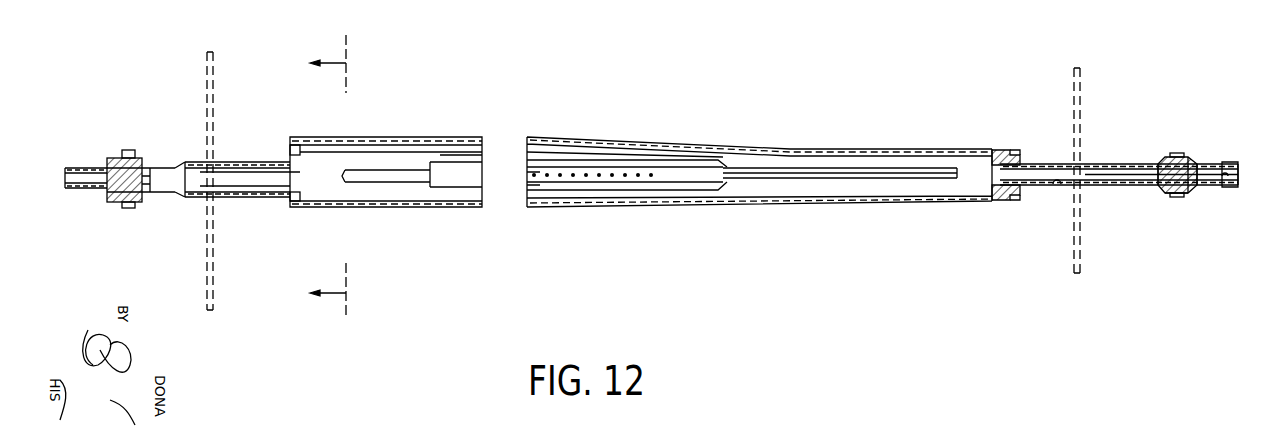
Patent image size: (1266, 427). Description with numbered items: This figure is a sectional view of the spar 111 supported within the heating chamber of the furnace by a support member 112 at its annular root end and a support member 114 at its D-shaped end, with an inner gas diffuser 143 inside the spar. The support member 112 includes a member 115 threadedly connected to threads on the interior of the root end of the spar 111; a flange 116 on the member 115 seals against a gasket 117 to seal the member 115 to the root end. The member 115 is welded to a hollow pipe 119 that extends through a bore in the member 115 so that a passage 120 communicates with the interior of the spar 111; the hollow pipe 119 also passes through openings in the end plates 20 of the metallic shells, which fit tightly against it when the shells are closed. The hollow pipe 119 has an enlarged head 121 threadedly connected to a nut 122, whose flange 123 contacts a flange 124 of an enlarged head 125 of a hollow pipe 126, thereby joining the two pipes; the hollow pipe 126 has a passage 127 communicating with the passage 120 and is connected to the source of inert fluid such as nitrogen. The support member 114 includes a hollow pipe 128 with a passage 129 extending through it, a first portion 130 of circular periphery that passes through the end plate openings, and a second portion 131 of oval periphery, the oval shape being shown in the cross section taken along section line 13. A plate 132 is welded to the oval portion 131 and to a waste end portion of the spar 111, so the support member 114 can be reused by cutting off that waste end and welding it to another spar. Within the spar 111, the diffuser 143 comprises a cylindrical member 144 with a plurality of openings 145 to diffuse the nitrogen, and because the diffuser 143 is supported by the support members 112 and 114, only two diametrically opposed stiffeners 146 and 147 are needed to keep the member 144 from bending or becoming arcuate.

The section line 13- 13 is at (344, 180).
The end plates 20 is at (1077, 273).
The spar 111 is at (680, 203).
The support member 112 is at (1030, 186).
The support member 114 is at (259, 198).
The member 115 is at (1020, 152).
The flange 116 is at (1005, 205).
The gasket 117 is at (1000, 150).
The hollow pipe 119 is at (1097, 163).
The passage 120 is at (1057, 184).
The enlarged head 121 is at (1165, 162).
The nut 122 is at (1175, 155).
The flange 123 is at (1190, 158).
The flange 124 is at (1175, 197).
The enlarged head 125 is at (1195, 188).
The hollow pipe 126 is at (1210, 145).
The passage 127 is at (1226, 187).
The hollow pipe 128 is at (222, 160).
The passage 129 is at (193, 162).
The first portion 130 is at (160, 195).
The second portion 131 is at (278, 202).
The plate 132 is at (290, 152).
The diffuser 143 is at (791, 179).
The cylindrical member 144 is at (727, 172).
The openings 145 is at (612, 178).
The stiffener 146 is at (540, 193).
The stiffener 147 is at (547, 167).